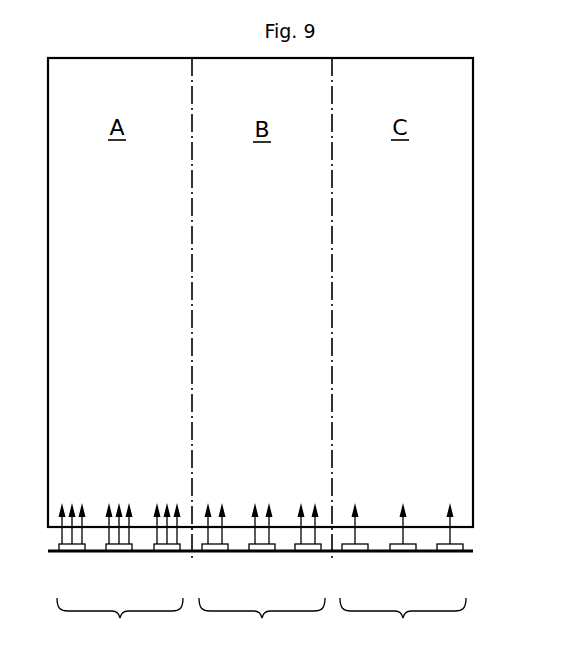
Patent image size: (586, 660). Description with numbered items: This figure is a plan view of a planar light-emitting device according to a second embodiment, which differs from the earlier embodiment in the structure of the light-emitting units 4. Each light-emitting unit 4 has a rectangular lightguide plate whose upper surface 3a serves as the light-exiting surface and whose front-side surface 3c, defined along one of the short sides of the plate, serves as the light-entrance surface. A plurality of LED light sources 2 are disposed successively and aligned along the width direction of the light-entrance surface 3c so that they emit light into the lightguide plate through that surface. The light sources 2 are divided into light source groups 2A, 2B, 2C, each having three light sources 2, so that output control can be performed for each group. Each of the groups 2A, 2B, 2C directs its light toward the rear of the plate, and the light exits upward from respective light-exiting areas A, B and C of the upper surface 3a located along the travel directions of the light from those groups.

The LED light source 2 is at (70, 553).
The light source group 2A is at (120, 623).
The light source group 2B is at (262, 623).
The light source group 2C is at (403, 623).
The upper surface 3a is at (250, 326).
The front-side surface 3c is at (238, 526).
The light-emitting unit 4 is at (475, 240).